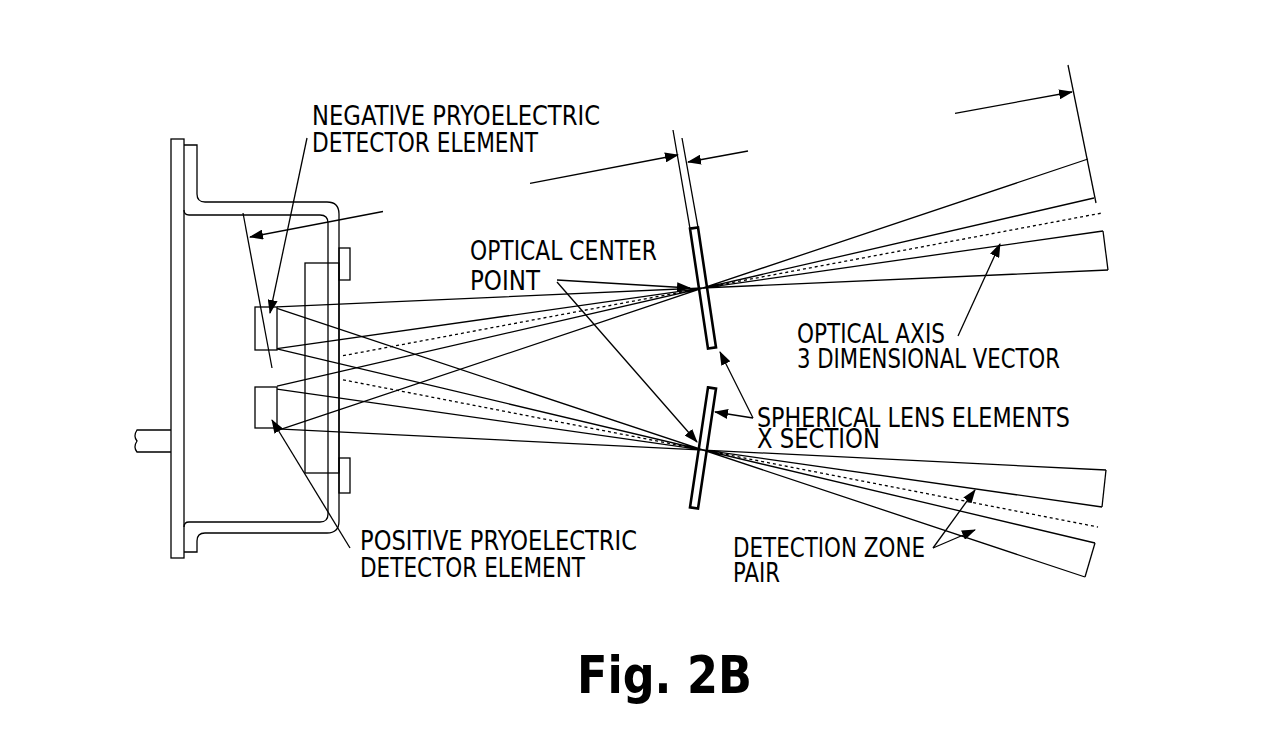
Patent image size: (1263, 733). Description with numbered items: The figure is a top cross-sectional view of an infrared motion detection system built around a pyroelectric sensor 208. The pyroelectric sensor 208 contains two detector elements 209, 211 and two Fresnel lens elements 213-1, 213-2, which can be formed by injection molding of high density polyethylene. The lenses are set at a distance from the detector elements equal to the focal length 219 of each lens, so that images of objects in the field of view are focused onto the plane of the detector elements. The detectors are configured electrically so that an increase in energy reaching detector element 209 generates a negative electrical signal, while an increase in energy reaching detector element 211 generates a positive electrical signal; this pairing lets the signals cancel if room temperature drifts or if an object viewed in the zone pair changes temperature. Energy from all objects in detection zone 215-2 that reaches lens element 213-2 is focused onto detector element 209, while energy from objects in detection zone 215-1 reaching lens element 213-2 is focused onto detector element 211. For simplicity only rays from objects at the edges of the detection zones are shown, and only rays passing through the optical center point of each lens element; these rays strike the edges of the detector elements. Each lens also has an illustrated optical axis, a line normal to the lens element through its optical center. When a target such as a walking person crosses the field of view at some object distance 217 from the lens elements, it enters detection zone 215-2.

The pyroelectric sensor 208 is at (150, 262).
The detector element 209 is at (257, 333).
The detector element 211 is at (260, 410).
The Fresnel lens element 213-1 is at (710, 263).
The Fresnel lens element 213-2 is at (695, 483).
The detection zone 215-1 is at (1128, 492).
The detection zone 215-2 is at (1108, 565).
The object distance 217 is at (868, 112).
The focal length 219 is at (434, 211).